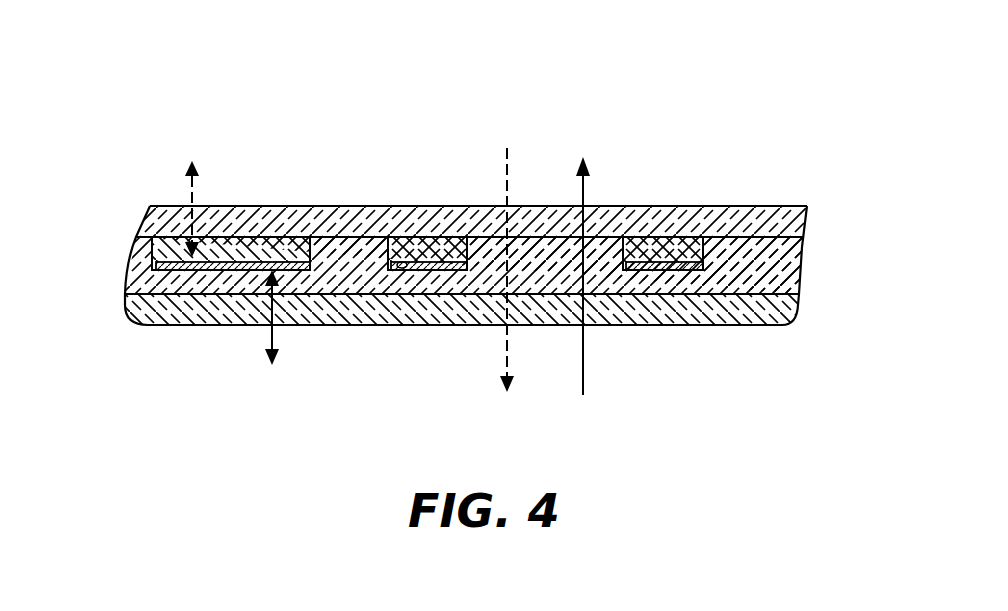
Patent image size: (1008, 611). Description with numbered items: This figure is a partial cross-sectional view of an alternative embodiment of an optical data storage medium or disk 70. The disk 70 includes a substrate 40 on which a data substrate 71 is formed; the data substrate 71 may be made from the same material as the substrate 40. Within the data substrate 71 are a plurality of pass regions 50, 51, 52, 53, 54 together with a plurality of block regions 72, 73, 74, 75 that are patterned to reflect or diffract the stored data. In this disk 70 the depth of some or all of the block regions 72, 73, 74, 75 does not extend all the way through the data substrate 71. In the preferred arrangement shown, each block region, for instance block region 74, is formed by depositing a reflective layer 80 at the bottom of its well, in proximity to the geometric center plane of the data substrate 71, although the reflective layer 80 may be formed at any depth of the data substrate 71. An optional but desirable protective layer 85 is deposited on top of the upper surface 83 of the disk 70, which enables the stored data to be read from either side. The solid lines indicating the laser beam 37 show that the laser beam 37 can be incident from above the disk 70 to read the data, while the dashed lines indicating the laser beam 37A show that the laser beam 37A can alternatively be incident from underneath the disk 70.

The optical data storage medium or disk 70 is at (676, 68).
The laser beam 37A is at (190, 198).
The laser beam 37 is at (273, 340).
The pass region 50 is at (130, 249).
The pass region 51 is at (340, 242).
The pass region 52 is at (492, 248).
The pass region 53 is at (601, 257).
The protective layer 85 is at (734, 214).
The pass region 54 is at (790, 206).
The upper surface 83 is at (797, 247).
The data substrate 71 is at (776, 268).
The substrate 40 is at (795, 322).
The block region 72 is at (166, 273).
The block region 73 is at (249, 272).
The reflective layer 80 is at (406, 270).
The block region 74 is at (437, 272).
The block region 75 is at (678, 270).